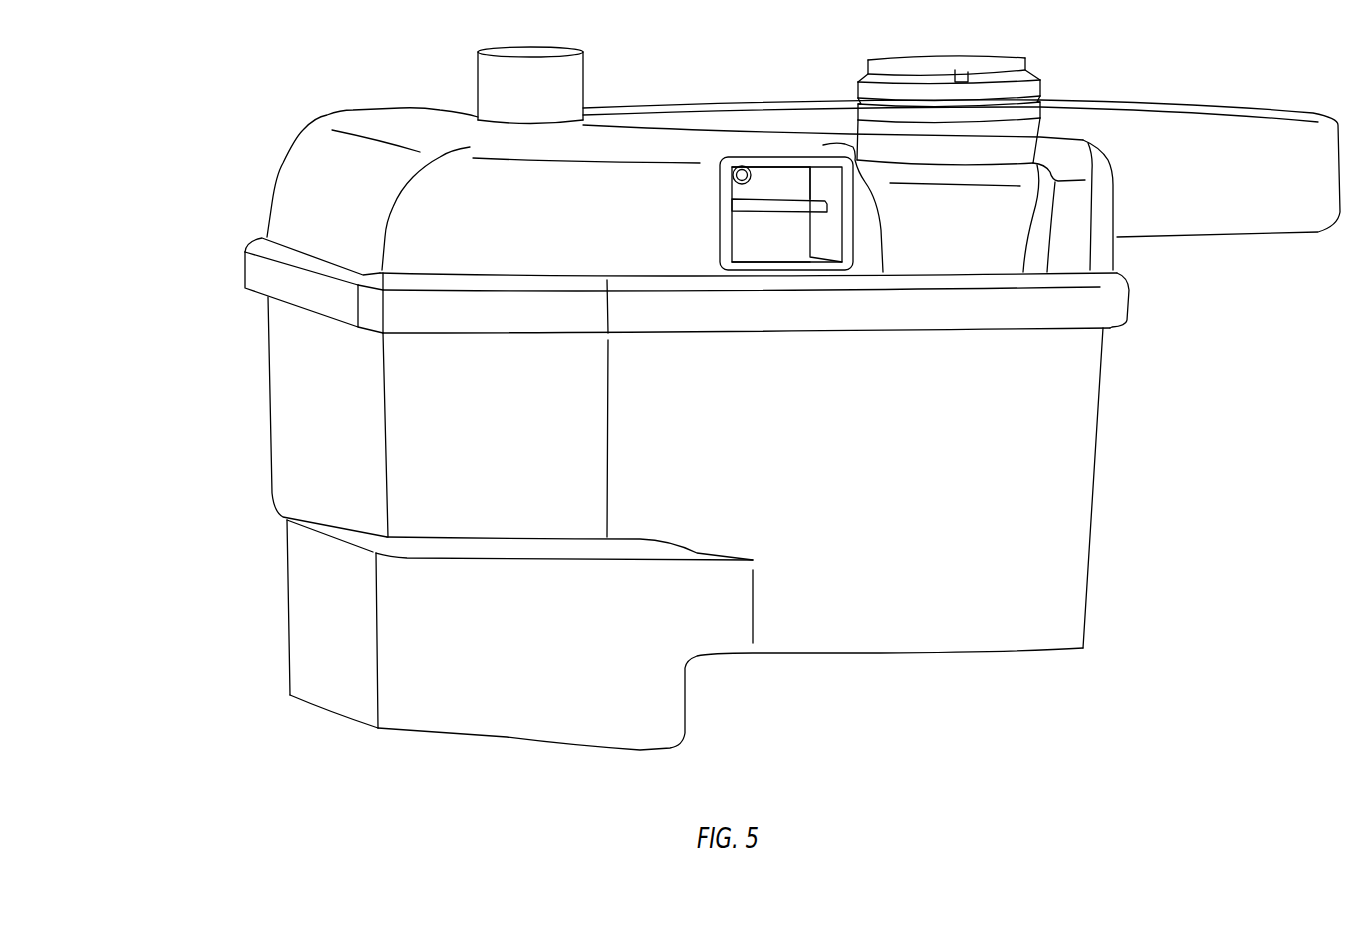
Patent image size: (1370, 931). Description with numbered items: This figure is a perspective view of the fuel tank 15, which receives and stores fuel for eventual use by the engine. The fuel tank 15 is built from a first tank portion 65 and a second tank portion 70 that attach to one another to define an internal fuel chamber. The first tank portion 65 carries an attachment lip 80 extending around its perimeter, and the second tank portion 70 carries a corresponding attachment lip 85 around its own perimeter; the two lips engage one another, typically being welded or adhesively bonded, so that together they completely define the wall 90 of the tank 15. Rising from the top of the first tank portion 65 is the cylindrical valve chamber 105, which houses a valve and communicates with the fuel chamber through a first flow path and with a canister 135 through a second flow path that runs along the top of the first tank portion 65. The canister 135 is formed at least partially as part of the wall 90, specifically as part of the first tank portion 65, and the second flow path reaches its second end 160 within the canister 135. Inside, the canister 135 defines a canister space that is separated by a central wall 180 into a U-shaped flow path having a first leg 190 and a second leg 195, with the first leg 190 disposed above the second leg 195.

The fuel tank 15 is at (1131, 369).
The first tank portion 65 is at (312, 148).
The second tank portion 70 is at (435, 652).
The attachment lip 80 is at (293, 263).
The attachment lip 85 is at (300, 302).
The wall 90 is at (491, 226).
The valve chamber 105 is at (572, 77).
The canister 135 is at (778, 146).
The second end 160 is at (750, 177).
The central wall 180 is at (743, 205).
The first leg 190 is at (797, 177).
The second leg 195 is at (797, 230).